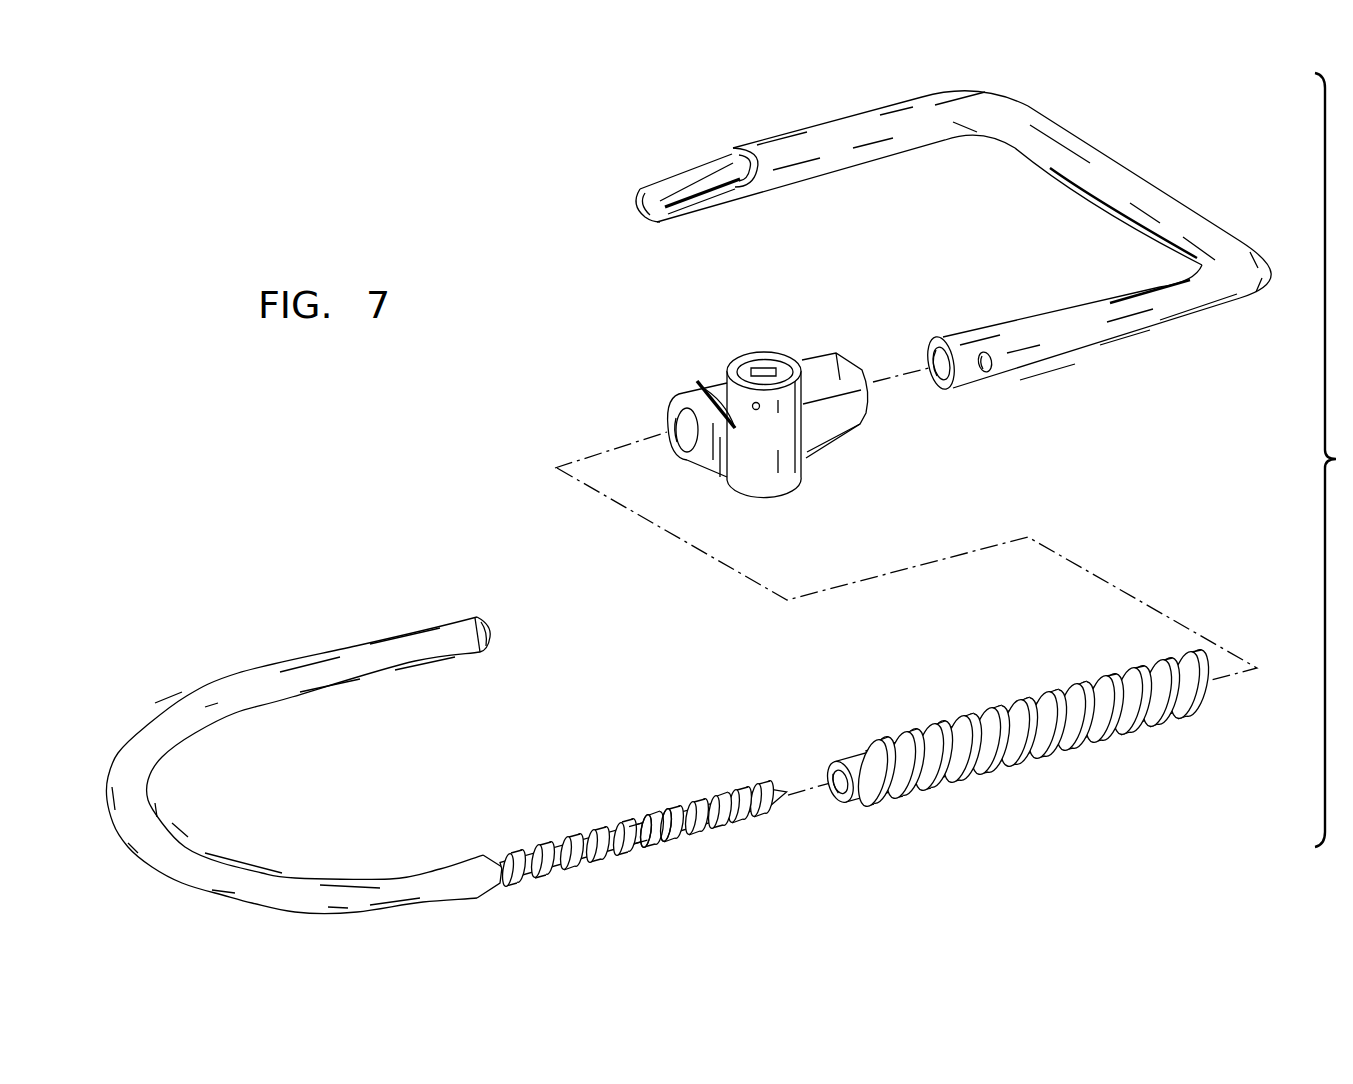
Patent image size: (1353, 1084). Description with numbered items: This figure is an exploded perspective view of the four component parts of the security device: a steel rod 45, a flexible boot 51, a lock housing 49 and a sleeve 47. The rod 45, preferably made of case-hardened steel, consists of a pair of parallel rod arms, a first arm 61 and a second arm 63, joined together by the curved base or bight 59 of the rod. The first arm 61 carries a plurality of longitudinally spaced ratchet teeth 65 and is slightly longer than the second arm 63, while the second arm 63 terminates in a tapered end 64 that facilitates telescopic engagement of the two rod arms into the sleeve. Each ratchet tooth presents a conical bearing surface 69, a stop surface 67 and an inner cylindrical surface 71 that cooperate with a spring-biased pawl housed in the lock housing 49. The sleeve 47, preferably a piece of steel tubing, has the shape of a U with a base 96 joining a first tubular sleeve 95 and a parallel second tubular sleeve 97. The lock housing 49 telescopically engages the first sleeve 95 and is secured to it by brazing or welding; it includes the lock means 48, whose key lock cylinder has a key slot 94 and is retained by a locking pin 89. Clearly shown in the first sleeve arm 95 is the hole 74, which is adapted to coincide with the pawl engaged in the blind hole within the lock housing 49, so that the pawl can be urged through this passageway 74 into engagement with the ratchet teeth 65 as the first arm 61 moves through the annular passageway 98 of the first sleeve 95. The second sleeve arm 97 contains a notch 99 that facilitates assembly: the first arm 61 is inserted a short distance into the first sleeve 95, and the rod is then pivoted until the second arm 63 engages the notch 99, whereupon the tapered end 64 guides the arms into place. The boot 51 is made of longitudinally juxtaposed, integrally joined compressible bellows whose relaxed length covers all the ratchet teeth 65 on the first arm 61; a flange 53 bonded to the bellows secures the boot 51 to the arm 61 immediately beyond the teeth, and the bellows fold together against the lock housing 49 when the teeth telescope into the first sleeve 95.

The rod 45 is at (240, 673).
The sleeve 47 is at (818, 118).
The lock means 48 is at (778, 360).
The lock housing 49 is at (804, 481).
The flexible boot 51 is at (1013, 703).
The flange 53 is at (848, 757).
The curved base or bight 59 is at (198, 847).
The first arm 61 is at (683, 840).
The second arm 63 is at (387, 662).
The tapered end 64 is at (492, 633).
The ratchet teeth 65 is at (647, 857).
The stop surface 67 is at (620, 820).
The conical bearing surface 69 is at (663, 812).
The inner cylindrical surface 71 is at (675, 810).
The passageway 74 is at (987, 370).
The locking pin 89 is at (750, 406).
The key slot 94 is at (765, 368).
The first tubular sleeve 95 is at (1087, 336).
The base 96 is at (1112, 177).
The second tubular sleeve 97 is at (805, 174).
The annular passageway 98 is at (936, 387).
The notch 99 is at (670, 178).